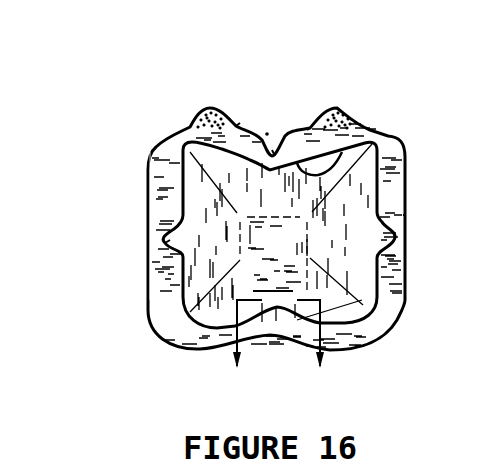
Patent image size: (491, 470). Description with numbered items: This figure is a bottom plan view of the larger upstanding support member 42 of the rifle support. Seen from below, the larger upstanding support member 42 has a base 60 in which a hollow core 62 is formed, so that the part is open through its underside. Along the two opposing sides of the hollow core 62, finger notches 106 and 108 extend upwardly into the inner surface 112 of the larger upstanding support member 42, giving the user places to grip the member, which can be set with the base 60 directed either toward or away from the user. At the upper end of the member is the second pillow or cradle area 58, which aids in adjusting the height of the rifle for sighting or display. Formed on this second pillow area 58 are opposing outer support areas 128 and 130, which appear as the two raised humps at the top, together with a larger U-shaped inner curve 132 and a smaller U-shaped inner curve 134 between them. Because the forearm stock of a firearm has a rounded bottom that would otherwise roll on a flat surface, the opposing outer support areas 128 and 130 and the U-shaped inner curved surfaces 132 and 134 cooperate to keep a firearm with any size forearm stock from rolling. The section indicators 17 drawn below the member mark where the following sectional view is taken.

The larger upstanding support member 42 is at (148, 184).
The second pillow area 58 is at (267, 132).
The base 60 is at (150, 313).
The hollow core 62 is at (210, 272).
The finger notch 106 is at (163, 243).
The finger notch 108 is at (406, 220).
The inner surface 112 is at (390, 136).
The outer support area 128 is at (197, 118).
The outer support area 130 is at (345, 116).
The larger U-shaped inner curve 132 is at (240, 123).
The smaller U-shaped inner curve 134 is at (277, 130).
The section line 17- 17 is at (280, 354).